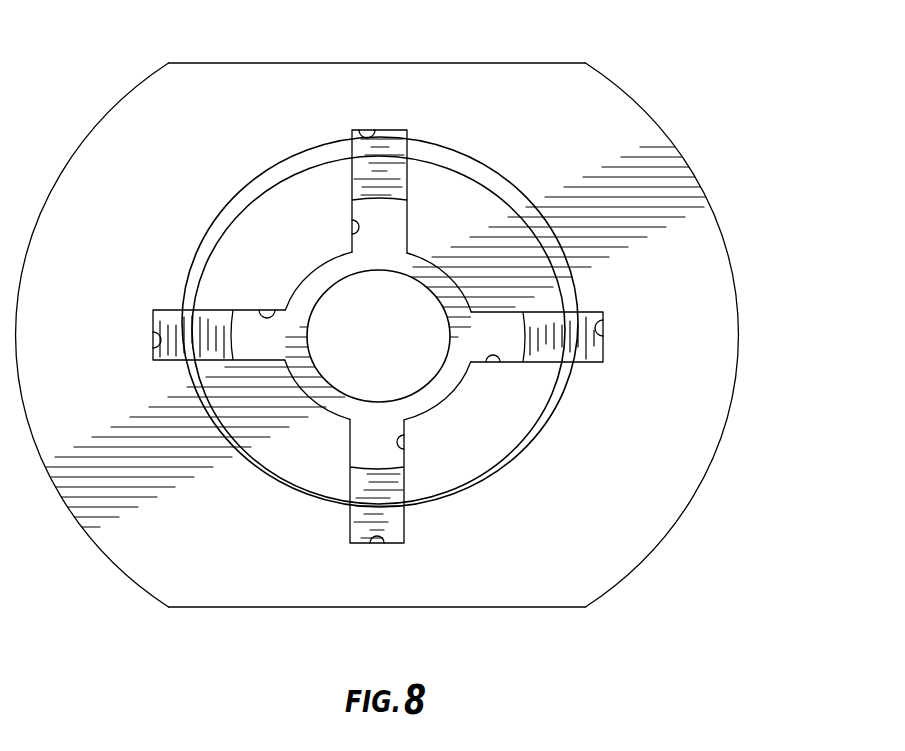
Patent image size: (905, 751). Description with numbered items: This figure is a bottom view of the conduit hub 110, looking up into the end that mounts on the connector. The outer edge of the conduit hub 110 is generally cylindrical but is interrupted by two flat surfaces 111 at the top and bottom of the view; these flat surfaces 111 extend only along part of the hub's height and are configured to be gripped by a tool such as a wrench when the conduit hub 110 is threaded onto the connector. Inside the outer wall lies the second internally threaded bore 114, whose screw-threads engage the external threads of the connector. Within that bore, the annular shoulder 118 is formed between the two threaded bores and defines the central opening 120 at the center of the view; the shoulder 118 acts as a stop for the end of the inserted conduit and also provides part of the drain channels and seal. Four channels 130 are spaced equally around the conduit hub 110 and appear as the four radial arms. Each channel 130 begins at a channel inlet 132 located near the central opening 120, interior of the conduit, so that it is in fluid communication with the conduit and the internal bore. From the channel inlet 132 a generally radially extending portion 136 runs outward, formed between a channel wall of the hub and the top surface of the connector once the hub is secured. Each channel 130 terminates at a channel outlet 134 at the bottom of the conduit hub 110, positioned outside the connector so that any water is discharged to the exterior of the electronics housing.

The conduit hub 110 is at (696, 178).
The flat surfaces 111 is at (456, 60).
The second internally threaded bore 114 is at (560, 392).
The annular shoulder 118 is at (293, 445).
The central opening 120 is at (323, 378).
The channel 130 is at (408, 130).
The channel inlet 132 is at (350, 250).
The channel outlet 134 is at (369, 128).
The radially extending portion 136 is at (393, 185).